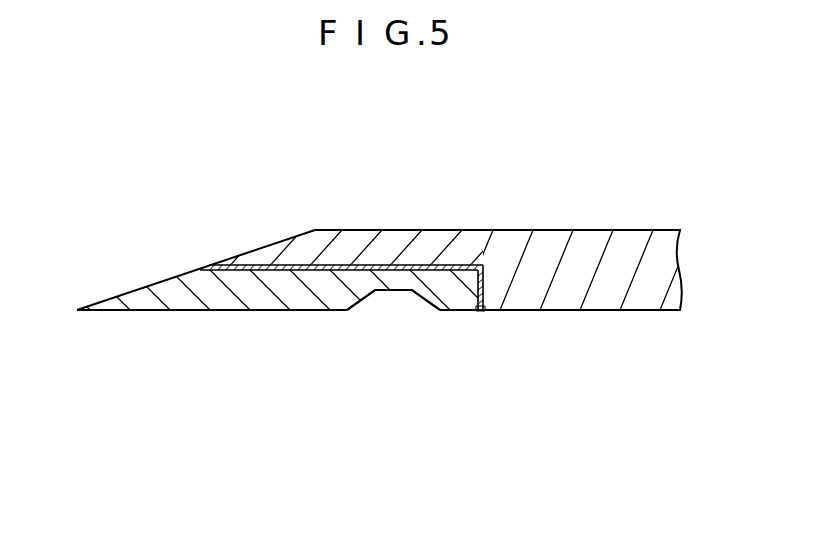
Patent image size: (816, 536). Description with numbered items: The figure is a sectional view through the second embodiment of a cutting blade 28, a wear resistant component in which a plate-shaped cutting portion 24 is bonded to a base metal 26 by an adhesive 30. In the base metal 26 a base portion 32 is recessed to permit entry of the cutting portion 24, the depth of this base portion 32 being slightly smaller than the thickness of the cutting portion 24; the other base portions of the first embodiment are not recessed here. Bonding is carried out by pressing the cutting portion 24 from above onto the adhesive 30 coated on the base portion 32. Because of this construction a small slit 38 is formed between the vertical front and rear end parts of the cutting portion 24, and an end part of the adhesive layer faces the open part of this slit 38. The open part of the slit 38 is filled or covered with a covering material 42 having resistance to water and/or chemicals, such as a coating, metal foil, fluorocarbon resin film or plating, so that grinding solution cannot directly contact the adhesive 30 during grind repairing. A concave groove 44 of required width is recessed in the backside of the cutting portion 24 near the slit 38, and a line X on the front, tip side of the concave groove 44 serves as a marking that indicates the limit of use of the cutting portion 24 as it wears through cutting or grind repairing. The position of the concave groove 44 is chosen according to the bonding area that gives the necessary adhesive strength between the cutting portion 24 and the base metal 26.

The cutting portion 24 is at (221, 288).
The base metal 26 is at (393, 243).
The cutting blade 28 is at (637, 337).
The adhesive 30 is at (198, 243).
The base portion 32 is at (266, 265).
The slit 38 is at (483, 292).
The covering material 42 is at (487, 331).
The concave groove 44 is at (392, 291).
The line X is at (345, 327).